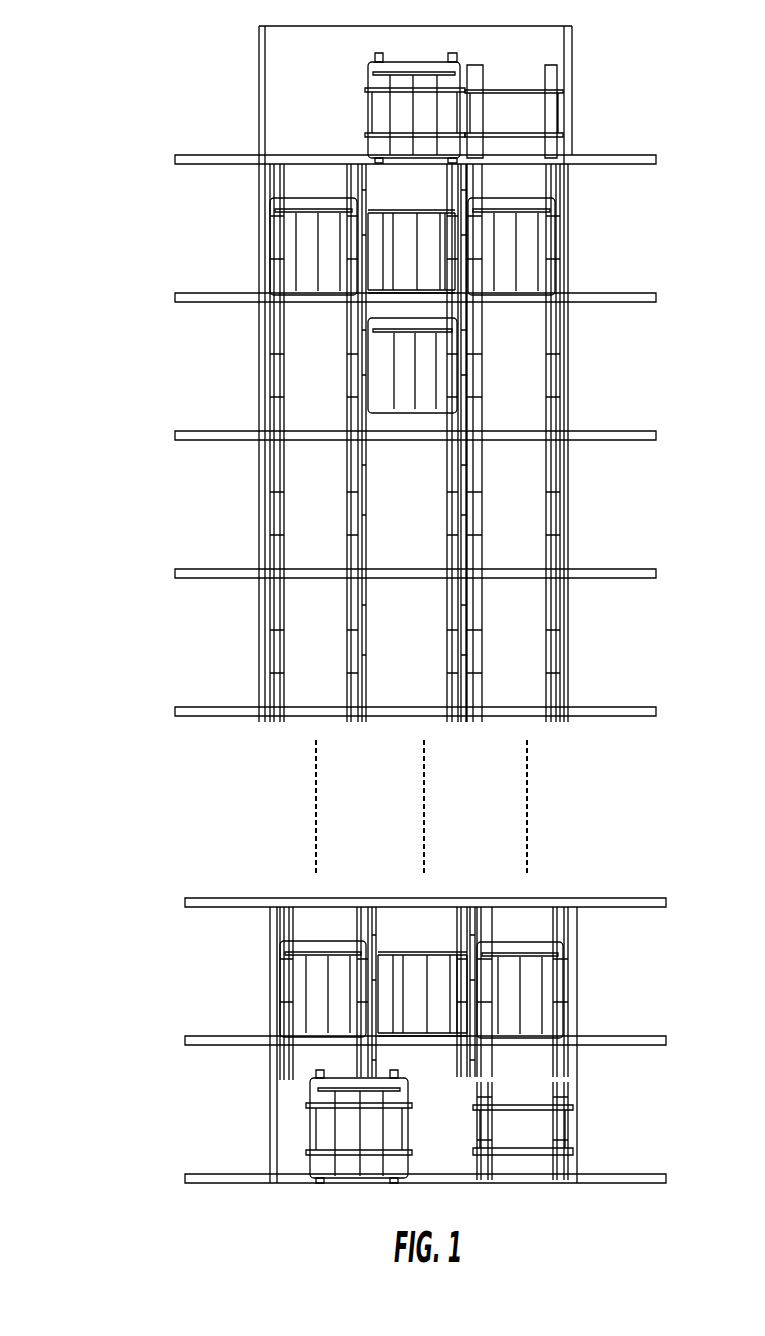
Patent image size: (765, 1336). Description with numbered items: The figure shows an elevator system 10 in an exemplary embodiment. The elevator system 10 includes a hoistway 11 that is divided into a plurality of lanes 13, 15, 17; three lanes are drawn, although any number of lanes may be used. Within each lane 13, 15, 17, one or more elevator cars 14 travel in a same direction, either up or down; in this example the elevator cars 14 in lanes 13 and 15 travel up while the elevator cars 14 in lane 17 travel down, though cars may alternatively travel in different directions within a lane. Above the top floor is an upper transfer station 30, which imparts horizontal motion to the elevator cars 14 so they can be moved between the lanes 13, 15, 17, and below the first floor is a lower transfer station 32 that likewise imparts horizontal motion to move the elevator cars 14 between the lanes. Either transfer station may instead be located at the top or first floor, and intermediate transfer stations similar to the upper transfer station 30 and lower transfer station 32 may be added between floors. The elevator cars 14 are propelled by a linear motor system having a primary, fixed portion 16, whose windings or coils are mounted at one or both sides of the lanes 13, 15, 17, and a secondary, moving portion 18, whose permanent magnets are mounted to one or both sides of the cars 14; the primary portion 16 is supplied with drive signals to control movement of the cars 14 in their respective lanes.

The elevator system 10 is at (116, 68).
The hoistway 11 is at (575, 45).
The lane 13 is at (523, 637).
The elevator car 14 is at (300, 245).
The lane 15 is at (403, 660).
The primary, fixed portion 16 is at (547, 513).
The lane 17 is at (300, 488).
The secondary, moving portion 18 is at (543, 268).
The upper transfer station 30 is at (300, 98).
The lower transfer station 32 is at (275, 1107).